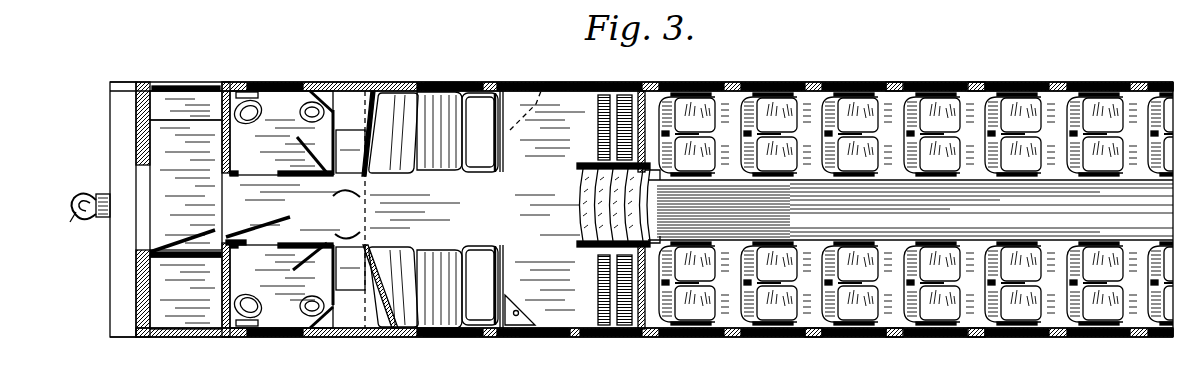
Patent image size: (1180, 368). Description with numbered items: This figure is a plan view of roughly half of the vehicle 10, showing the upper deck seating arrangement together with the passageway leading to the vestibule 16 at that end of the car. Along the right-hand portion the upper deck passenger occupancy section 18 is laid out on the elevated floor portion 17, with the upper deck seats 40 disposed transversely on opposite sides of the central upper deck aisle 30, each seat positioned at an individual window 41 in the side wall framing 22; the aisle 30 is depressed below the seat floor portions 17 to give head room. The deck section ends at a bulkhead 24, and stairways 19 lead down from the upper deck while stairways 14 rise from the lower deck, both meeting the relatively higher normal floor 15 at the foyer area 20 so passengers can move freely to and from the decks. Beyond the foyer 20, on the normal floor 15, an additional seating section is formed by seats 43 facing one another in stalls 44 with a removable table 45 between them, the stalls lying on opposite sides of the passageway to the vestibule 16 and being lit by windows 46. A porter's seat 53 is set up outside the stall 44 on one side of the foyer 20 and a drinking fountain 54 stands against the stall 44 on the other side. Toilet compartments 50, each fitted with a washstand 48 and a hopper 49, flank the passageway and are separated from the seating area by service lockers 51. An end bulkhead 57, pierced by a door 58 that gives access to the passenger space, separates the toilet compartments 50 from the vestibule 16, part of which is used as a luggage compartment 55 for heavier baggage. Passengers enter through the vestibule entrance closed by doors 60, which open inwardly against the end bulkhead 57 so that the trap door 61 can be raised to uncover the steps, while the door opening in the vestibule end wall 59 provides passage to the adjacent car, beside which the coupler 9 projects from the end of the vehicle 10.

The coupler 9 is at (90, 221).
The vehicle 10 is at (365, 90).
The stairway 14 is at (598, 133).
The normal floor 15 is at (411, 209).
The vestibule 16 is at (190, 166).
The elevated floor portion 17 is at (970, 336).
The upper deck passenger occupancy section 18 is at (600, 290).
The stairway 19 is at (580, 188).
The foyer area 20 is at (547, 215).
The side wall framing 22 is at (895, 84).
The bulkhead 24 is at (641, 95).
The upper deck aisle 30 is at (910, 210).
The upper deck seat 40 is at (702, 98).
The window 41 is at (765, 95).
The seat 43 is at (406, 96).
The stall 44 is at (496, 245).
The removable table 45 is at (440, 95).
The window 46 is at (447, 84).
The washstand 48 is at (308, 100).
The hopper 49 is at (253, 100).
The toilet compartment 50 is at (297, 209).
The service locker 51 is at (343, 228).
The porter's seat 53 is at (520, 92).
The drinking fountain 54 is at (512, 297).
The luggage compartment 55 is at (190, 290).
The end bulkhead 57 is at (232, 238).
The door 58 is at (276, 225).
The vestibule end wall 59 is at (150, 122).
The door 60 is at (177, 87).
The trap door 61 is at (206, 95).